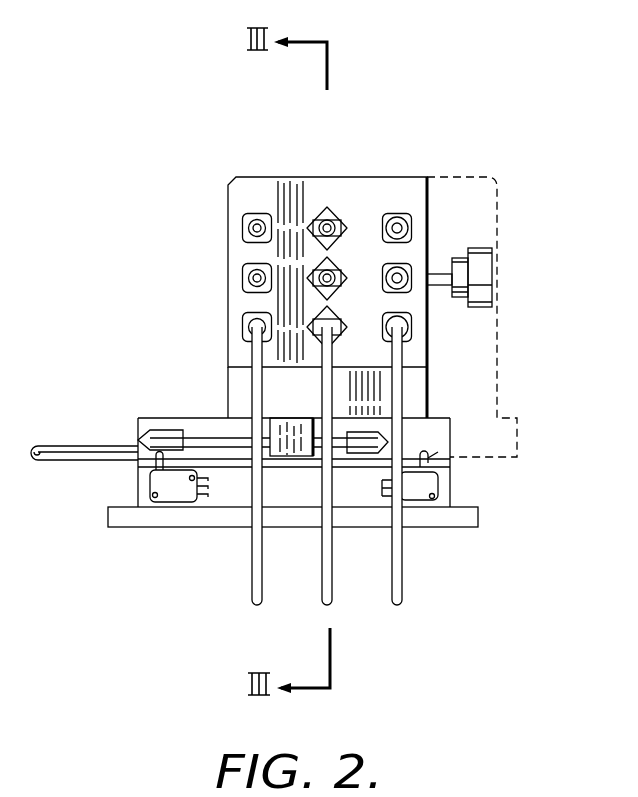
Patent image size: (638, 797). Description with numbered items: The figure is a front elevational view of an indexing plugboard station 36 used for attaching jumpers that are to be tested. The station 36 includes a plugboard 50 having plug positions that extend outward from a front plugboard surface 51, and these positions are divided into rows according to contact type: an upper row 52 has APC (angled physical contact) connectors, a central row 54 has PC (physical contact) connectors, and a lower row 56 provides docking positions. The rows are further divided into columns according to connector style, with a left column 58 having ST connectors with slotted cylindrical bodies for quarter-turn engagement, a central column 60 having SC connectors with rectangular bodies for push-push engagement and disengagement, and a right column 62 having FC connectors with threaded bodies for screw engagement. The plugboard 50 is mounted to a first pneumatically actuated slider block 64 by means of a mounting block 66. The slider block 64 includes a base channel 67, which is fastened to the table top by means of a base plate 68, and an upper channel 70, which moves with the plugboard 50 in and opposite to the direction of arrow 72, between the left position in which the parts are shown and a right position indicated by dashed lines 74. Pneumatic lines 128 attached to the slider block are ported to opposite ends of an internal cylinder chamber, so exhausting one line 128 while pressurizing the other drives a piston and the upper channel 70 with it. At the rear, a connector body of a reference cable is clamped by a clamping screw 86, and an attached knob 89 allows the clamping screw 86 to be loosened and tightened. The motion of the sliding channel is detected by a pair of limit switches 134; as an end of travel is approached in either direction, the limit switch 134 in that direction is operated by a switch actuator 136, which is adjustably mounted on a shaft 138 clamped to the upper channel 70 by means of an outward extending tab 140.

The indexing plugboard station 36 is at (209, 104).
The plugboard 50 is at (235, 172).
The front plugboard surface 51 is at (370, 201).
The upper row 52 is at (210, 231).
The central row 54 is at (210, 279).
The lower row 56 is at (210, 328).
The left column 58 is at (257, 160).
The central column 60 is at (326, 160).
The right column 62 is at (396, 160).
The first pneumatically actuated slider block 64 is at (130, 432).
The mounting block 66 is at (411, 368).
The base channel 67 is at (452, 487).
The base plate 68 is at (160, 530).
The upper channel 70 is at (205, 417).
The arrow 72 is at (178, 630).
The dashed lines 74 is at (497, 180).
The clamping screw 86 is at (438, 272).
The knob 89 is at (478, 248).
The pneumatic line 128 is at (65, 447).
The limit switch 134 is at (148, 484).
The switch actuator 136 is at (160, 432).
The shaft 138 is at (230, 447).
The outward extending tab 140 is at (290, 430).